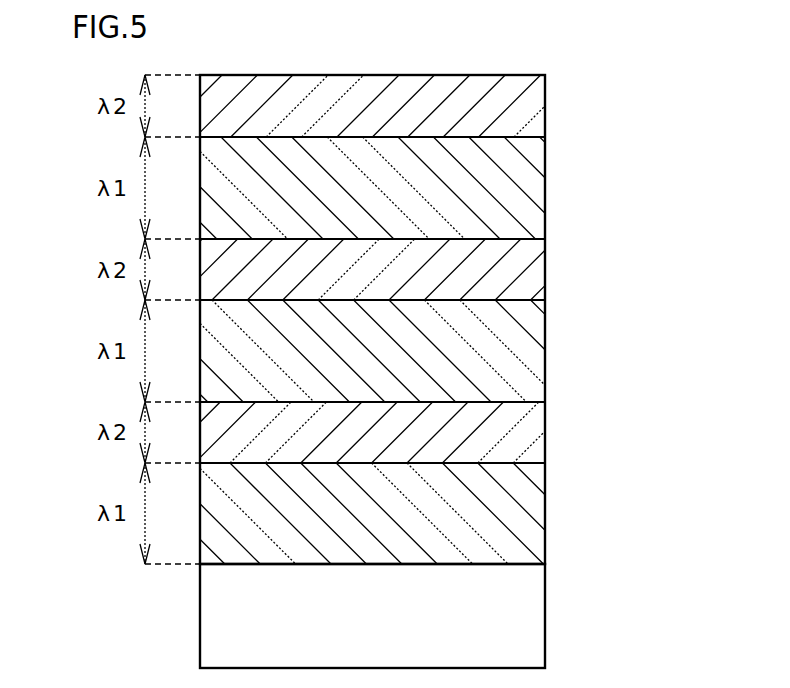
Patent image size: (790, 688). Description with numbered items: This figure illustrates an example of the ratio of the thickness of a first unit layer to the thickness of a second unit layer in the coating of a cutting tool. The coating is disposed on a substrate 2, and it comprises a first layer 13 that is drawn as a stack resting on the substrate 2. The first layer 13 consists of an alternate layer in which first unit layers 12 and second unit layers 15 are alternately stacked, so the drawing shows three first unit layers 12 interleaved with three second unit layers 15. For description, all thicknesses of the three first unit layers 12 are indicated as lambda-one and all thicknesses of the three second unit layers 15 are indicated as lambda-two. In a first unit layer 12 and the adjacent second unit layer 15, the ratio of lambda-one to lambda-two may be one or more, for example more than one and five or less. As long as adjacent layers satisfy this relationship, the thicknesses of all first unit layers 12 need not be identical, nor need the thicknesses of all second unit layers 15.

The substrate 2 is at (527, 616).
The first unit layer 12 is at (532, 188).
The first layer 13 is at (439, 319).
The second unit layer 15 is at (532, 106).